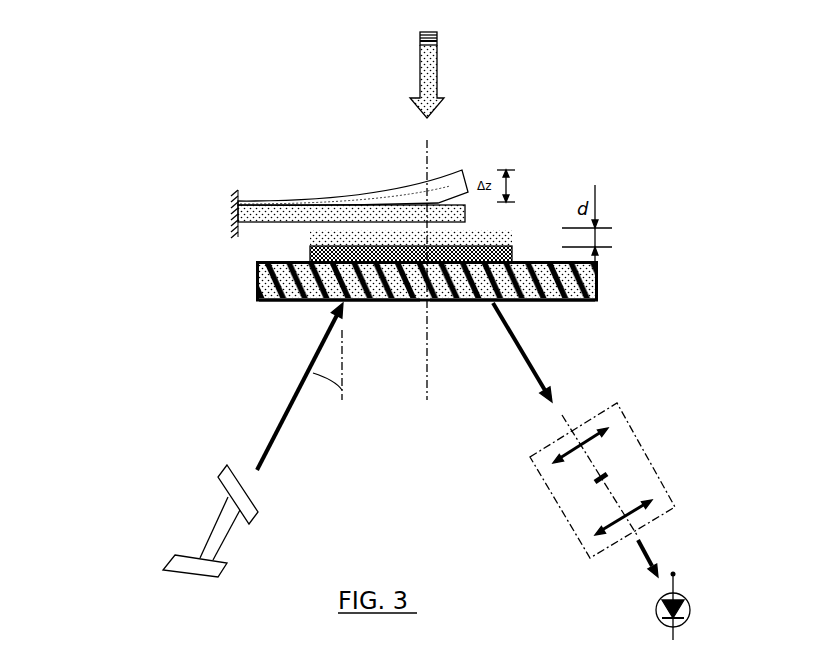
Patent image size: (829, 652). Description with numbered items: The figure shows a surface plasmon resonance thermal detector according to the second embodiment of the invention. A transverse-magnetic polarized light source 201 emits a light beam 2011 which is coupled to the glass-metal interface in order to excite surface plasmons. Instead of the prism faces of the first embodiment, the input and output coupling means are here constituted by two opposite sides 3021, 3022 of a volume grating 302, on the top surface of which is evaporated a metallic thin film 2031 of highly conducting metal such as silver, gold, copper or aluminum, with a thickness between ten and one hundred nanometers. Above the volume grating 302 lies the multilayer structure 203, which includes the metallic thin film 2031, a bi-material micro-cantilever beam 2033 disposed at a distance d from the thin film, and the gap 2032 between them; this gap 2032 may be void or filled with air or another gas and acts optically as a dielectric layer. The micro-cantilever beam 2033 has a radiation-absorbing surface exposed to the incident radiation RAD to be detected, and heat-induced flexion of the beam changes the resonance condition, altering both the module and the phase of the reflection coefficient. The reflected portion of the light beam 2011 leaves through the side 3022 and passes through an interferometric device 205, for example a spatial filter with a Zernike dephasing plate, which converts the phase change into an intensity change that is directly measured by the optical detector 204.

The transverse-magnetic polarized light source 201 is at (210, 540).
The light beam 2011 is at (282, 428).
The multilayer structure 203 is at (348, 180).
The metallic thin film 2031 is at (515, 250).
The gap 2032 is at (343, 235).
The bi-material micro-cantilever beam 2033 is at (390, 160).
The volume grating 302 is at (597, 283).
The side of the volume grating 3021 is at (295, 297).
The side of the volume grating 3022 is at (555, 302).
The interferometric device 205 is at (541, 494).
The optical detector 204 is at (691, 606).
The radiation RAD is at (433, 83).